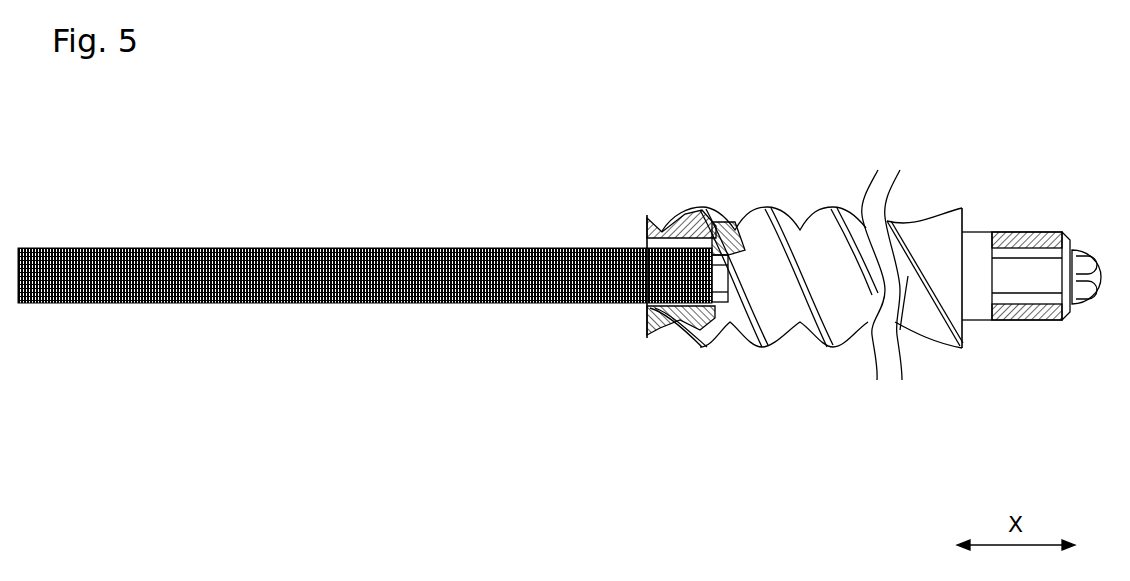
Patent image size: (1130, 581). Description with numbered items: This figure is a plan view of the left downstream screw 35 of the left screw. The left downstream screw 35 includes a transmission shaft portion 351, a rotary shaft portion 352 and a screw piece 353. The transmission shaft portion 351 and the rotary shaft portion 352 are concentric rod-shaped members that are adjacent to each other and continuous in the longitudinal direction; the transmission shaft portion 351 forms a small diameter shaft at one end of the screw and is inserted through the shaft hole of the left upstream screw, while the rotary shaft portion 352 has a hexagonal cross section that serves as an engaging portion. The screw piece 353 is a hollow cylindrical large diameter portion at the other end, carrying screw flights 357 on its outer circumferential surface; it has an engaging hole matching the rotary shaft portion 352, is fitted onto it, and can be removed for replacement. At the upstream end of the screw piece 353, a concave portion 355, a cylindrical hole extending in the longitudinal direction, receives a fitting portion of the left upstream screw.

The left downstream screw 35 is at (977, 210).
The transmission shaft portion 351 is at (562, 250).
The rotary shaft portion 352 is at (728, 255).
The screw piece 353 is at (807, 243).
The concave portion 355 is at (655, 302).
The screw flights 357 is at (772, 340).